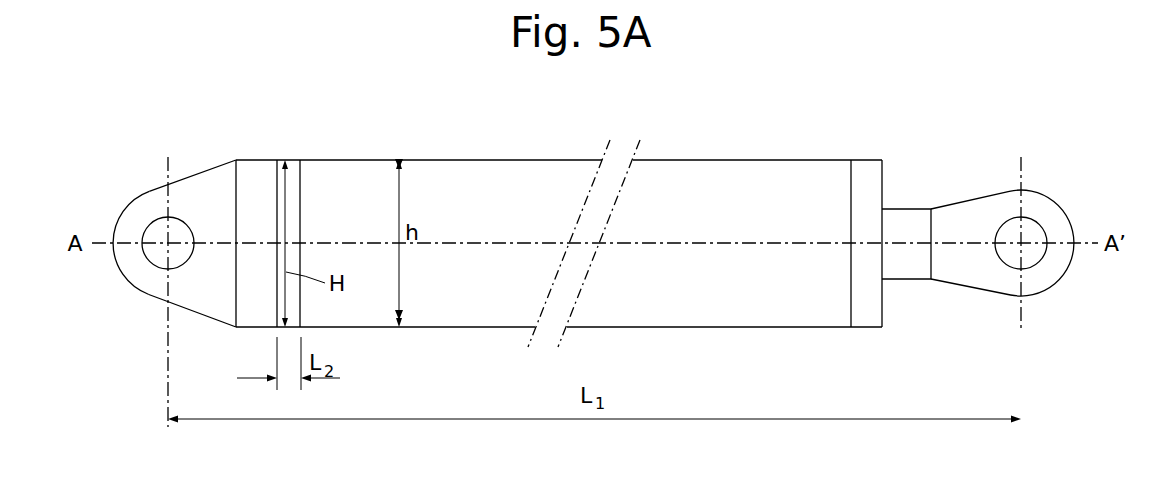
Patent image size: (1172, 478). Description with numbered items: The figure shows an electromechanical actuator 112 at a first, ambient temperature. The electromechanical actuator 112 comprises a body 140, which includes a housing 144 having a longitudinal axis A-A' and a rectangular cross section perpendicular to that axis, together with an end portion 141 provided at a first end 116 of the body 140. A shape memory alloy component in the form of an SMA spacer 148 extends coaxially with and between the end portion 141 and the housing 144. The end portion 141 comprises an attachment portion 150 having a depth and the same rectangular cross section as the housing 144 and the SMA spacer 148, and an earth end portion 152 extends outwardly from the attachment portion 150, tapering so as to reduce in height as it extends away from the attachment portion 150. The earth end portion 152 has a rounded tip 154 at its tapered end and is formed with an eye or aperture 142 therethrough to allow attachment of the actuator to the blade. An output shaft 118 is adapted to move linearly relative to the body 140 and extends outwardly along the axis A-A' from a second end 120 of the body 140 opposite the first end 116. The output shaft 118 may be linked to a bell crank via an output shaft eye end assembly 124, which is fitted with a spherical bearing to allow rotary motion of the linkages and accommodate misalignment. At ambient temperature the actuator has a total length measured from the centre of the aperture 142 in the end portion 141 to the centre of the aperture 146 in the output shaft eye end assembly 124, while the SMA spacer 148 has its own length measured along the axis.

The electromechanical actuator 112 is at (713, 160).
The first end 116 is at (197, 153).
The output shaft 118 is at (910, 209).
The second end 120 is at (872, 160).
The output shaft eye end assembly 124 is at (1052, 205).
The body 140 is at (380, 328).
The end portion 141 is at (198, 313).
The aperture 142 is at (148, 267).
The housing 144 is at (530, 160).
The aperture 146 is at (1045, 262).
The SMA spacer 148 is at (293, 160).
The attachment portion 150 is at (252, 160).
The earth end portion 152 is at (155, 200).
The rounded tip 154 is at (127, 213).